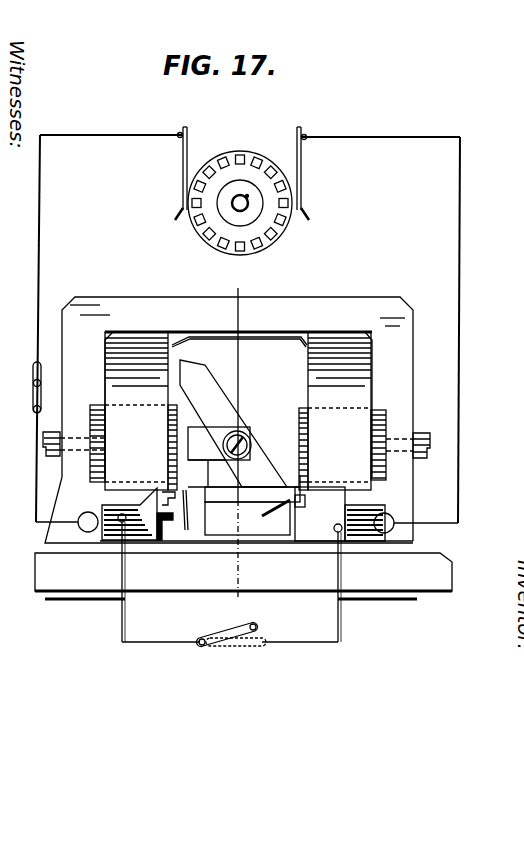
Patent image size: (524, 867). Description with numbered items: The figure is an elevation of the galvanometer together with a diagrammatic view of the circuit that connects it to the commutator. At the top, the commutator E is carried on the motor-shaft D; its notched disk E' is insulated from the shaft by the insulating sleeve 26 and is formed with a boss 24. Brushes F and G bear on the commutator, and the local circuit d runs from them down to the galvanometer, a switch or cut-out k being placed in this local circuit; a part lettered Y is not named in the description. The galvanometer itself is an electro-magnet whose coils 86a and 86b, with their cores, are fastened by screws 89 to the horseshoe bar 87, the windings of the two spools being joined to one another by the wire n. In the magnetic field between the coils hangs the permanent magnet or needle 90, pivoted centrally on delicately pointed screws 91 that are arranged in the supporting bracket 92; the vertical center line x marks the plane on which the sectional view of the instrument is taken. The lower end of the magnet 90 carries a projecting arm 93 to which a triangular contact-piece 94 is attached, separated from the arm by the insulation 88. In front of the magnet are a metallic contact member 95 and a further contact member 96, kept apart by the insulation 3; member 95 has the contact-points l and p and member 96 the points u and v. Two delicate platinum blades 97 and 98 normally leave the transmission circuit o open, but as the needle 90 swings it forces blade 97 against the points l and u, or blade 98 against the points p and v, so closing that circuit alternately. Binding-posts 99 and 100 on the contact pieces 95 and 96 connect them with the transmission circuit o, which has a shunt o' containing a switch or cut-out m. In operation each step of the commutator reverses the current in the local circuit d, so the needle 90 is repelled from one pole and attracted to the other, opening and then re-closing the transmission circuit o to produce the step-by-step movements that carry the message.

The motor-shaft D is at (231, 203).
The insulating sleeve 26 is at (268, 188).
The boss 24 is at (240, 228).
The brush holder F is at (181, 187).
The brush holder G is at (305, 168).
The commutator E is at (173, 227).
The notched disk E' is at (309, 227).
The circuit Y is at (368, 244).
The local circuit d is at (247, 329).
The switch or cut-out k is at (26, 387).
The horseshoe bar 87 is at (229, 420).
The wire n is at (230, 348).
The section line x is at (235, 443).
The coil 86a is at (133, 411).
The coil 86b is at (342, 411).
The screw 89 is at (43, 440).
The permanent magnet 90 is at (222, 400).
The pointed screw 91 is at (252, 445).
The supporting bracket 92 is at (244, 457).
The metallic contact member 95 is at (135, 540).
The binding-post 99 is at (118, 528).
The contact-point u is at (165, 526).
The insulation 3 is at (168, 538).
The contact-point l is at (165, 499).
The platinum blade 97 is at (195, 510).
The insulation 88 is at (256, 514).
The projecting arm 93 is at (262, 513).
The triangular contact-piece 94 is at (285, 515).
The contact-point p is at (305, 503).
The contact-point v is at (300, 521).
The contact member 96 is at (300, 543).
The platinum blade 98 is at (290, 535).
The binding-post 100 is at (334, 535).
The transmission circuit o is at (243, 564).
The shunt o' is at (232, 609).
The switch or cut-out m is at (230, 644).